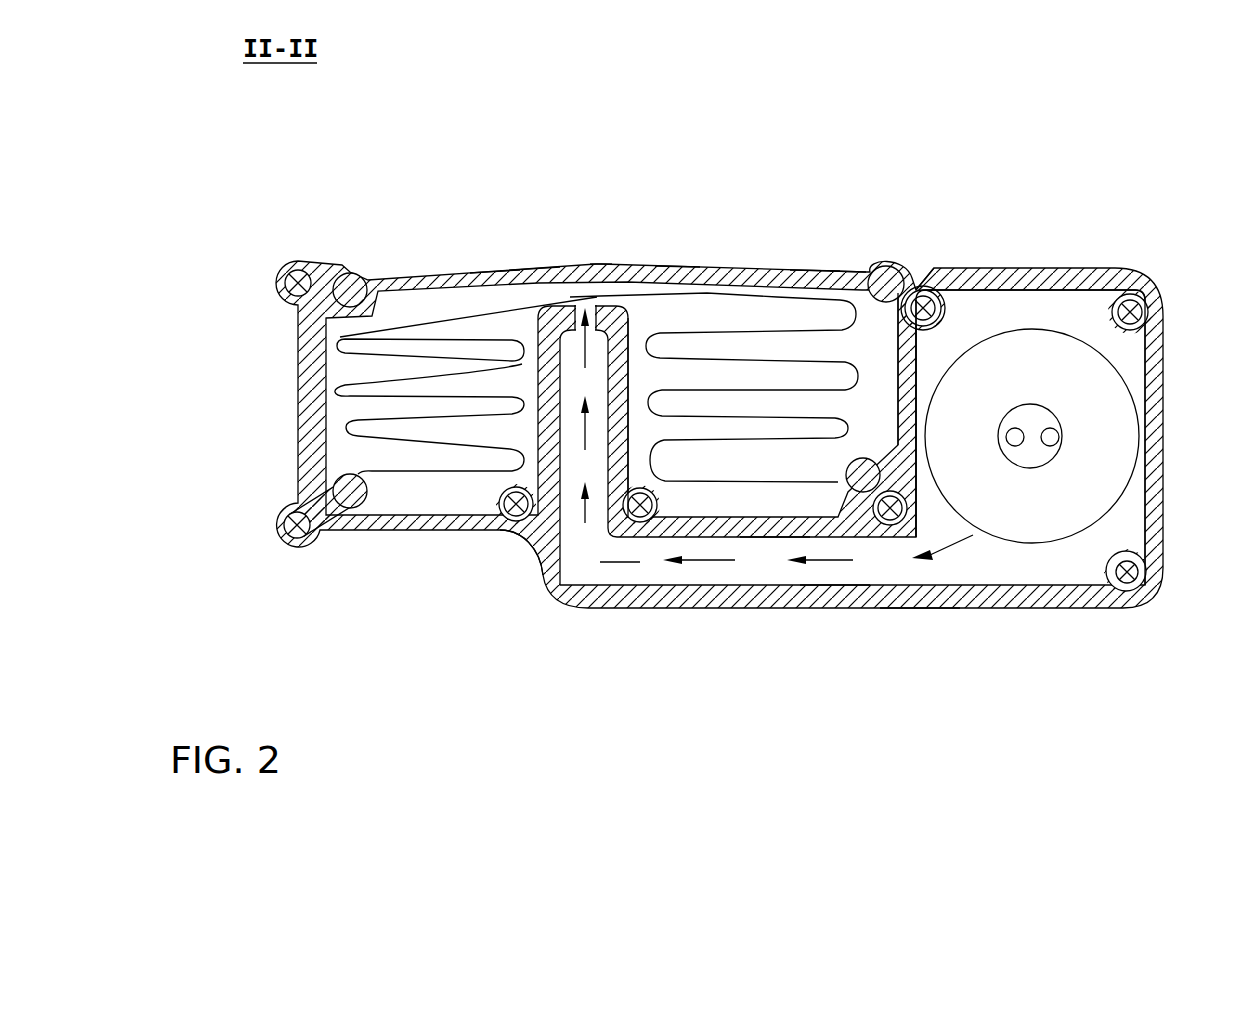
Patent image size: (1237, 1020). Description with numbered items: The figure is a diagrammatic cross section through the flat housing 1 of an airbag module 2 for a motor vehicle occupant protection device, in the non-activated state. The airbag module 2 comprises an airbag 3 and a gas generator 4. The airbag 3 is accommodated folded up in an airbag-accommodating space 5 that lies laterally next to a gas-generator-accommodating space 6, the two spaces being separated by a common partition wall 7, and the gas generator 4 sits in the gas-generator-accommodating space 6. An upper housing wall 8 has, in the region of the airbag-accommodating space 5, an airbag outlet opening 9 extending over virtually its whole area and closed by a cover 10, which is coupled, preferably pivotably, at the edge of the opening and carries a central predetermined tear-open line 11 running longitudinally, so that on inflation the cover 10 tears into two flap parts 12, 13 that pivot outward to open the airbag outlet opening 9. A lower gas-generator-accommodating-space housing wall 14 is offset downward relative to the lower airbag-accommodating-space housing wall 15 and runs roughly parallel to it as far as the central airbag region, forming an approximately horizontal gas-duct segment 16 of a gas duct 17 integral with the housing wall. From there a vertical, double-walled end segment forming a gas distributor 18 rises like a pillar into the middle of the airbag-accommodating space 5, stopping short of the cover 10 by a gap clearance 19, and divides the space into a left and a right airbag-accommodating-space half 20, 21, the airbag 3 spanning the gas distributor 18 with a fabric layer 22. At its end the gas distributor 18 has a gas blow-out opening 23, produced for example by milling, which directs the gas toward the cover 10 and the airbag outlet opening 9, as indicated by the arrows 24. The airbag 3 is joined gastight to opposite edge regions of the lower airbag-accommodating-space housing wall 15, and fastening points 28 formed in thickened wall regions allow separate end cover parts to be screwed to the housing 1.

The housing 1 is at (1128, 268).
The airbag module 2 is at (954, 338).
The airbag 3 is at (750, 295).
The gas generator 4 is at (1097, 432).
The airbag-accommodating space 5 is at (441, 335).
The gas-generator-accommodating space 6 is at (1073, 312).
The partition wall 7 is at (906, 398).
The upper housing wall 8 is at (937, 256).
The airbag outlet opening 9 is at (620, 382).
The cover 10 is at (529, 252).
The predetermined tear-open line 11 is at (603, 268).
The flap part 12 is at (497, 268).
The flap part 13 is at (815, 282).
The lower gas-generator-accommodating-space housing wall 14 is at (924, 597).
The lower airbag-accommodating-space housing wall 15 is at (777, 525).
The gas-duct segment 16 is at (832, 590).
The gas duct 17 is at (646, 578).
The gas distributor 18 is at (678, 266).
The gap clearance 19 is at (575, 322).
The left airbag-accommodating-space half 20 is at (383, 340).
The right airbag-accommodating-space half 21 is at (851, 277).
The fabric layer 22 is at (708, 293).
The gas blow-out opening 23 is at (582, 290).
The arrows 24 is at (556, 580).
The fastening points 28 is at (298, 283).